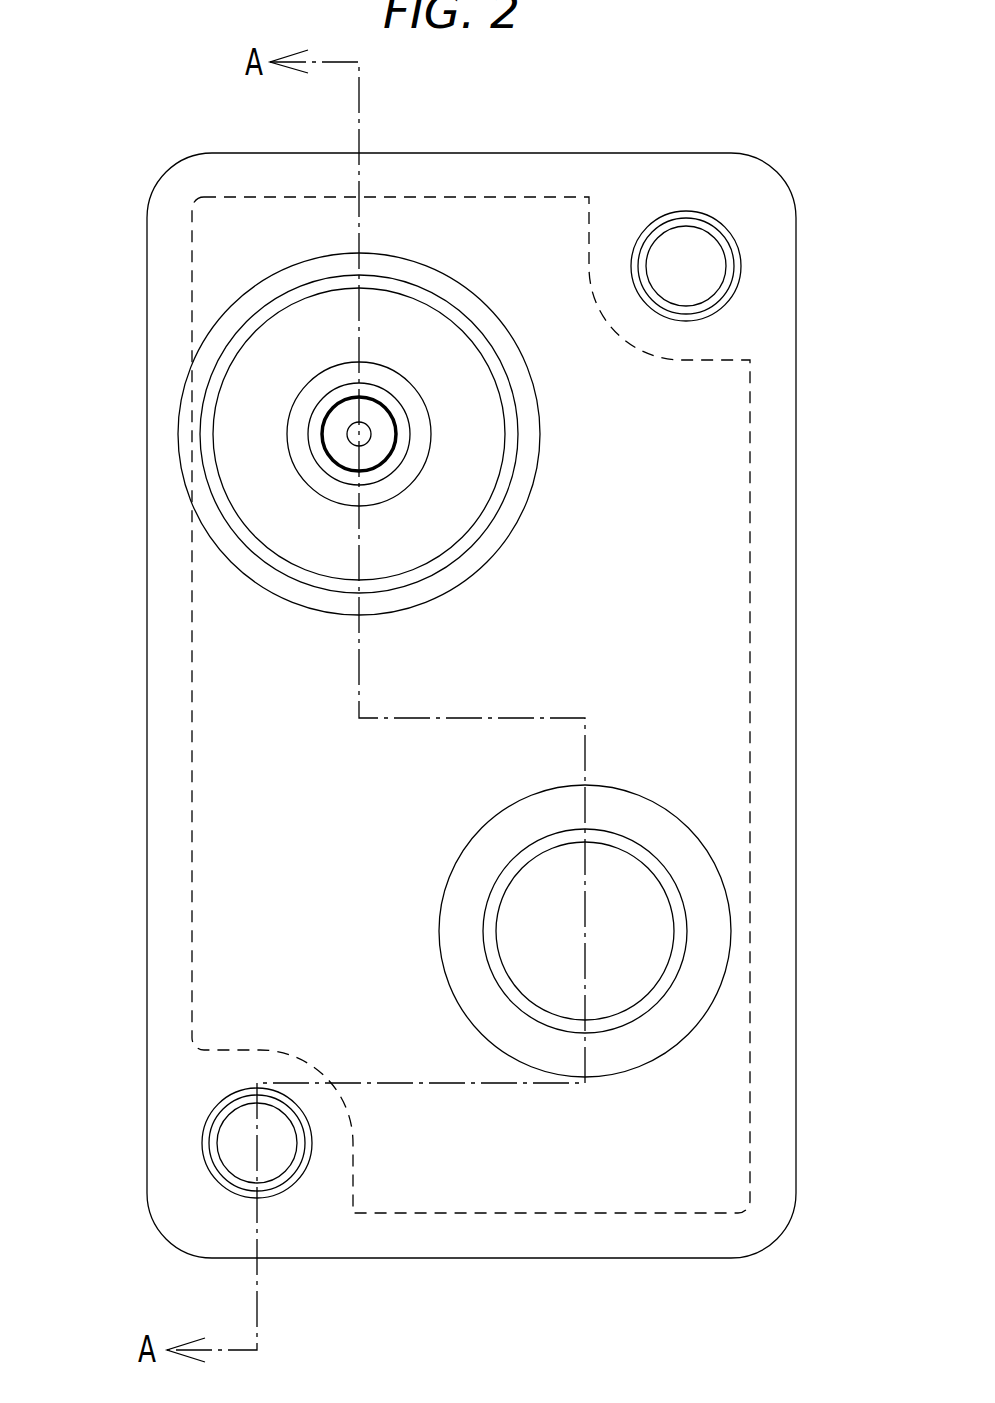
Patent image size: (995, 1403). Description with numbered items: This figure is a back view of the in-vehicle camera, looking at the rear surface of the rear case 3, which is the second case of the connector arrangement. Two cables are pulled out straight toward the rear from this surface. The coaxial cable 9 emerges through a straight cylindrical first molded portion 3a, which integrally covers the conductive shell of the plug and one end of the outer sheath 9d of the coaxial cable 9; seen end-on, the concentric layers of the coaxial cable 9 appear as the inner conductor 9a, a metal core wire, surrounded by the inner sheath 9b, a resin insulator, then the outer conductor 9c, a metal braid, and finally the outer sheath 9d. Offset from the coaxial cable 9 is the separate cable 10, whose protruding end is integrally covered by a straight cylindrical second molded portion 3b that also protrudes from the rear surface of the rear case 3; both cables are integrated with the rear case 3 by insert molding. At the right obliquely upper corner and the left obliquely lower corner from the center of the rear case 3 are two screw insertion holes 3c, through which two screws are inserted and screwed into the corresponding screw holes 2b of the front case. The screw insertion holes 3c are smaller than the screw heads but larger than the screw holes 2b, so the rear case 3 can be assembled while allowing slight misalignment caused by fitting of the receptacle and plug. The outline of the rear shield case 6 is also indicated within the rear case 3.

The screw hole 2b is at (712, 288).
The rear case 3 is at (163, 180).
The first molded portion 3a is at (232, 302).
The second molded portion 3b is at (720, 992).
The screw insertion hole 3c is at (728, 252).
The rear shield case 6 is at (750, 515).
The coaxial cable 9 is at (297, 395).
The inner conductor 9a is at (347, 434).
The inner sheath 9b is at (337, 452).
The outer conductor 9c is at (322, 475).
The outer sheath 9d is at (330, 500).
The separate cable 10 is at (673, 922).